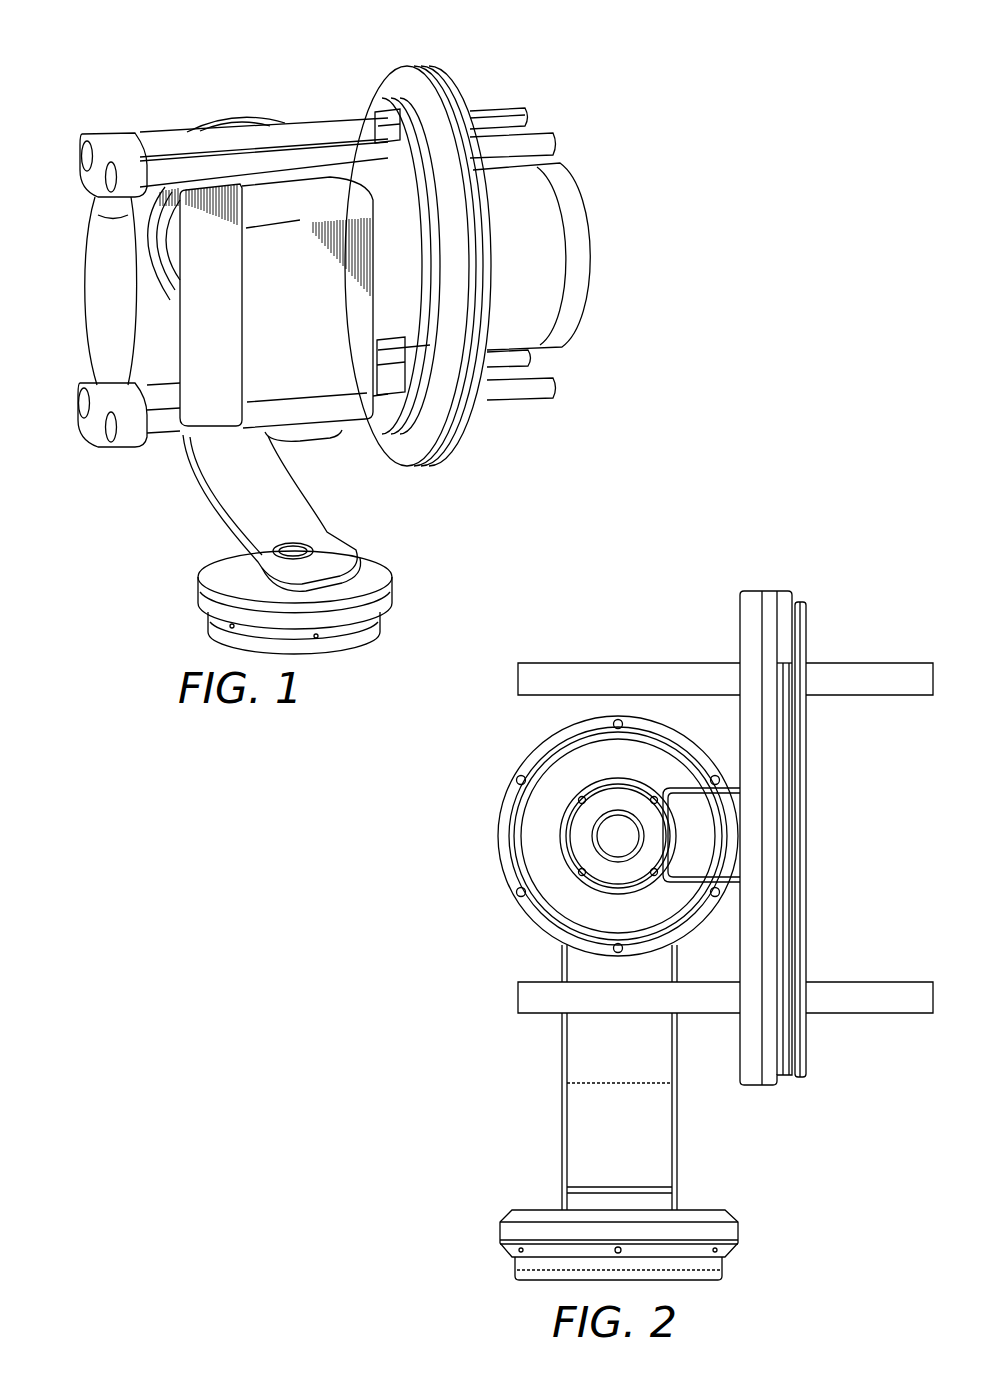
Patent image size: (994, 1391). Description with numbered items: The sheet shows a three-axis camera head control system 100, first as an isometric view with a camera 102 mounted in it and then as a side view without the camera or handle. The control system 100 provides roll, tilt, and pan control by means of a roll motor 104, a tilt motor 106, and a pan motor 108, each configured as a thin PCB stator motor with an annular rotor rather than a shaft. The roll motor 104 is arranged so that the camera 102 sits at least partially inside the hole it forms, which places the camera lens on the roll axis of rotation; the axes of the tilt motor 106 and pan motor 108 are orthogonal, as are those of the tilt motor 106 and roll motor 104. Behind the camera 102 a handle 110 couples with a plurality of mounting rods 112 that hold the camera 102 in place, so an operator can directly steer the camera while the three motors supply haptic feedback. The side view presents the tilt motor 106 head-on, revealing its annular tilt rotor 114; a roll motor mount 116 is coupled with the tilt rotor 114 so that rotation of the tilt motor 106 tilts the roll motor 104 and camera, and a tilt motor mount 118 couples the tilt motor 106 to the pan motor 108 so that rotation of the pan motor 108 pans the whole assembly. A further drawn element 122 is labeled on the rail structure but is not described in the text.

In FIG. 1, the control system 100 is at (591, 77).
In FIG. 2, the control system 100 is at (648, 630).
In FIG. 1, the camera 102 is at (313, 410).
In FIG. 1, the roll motor 104 is at (437, 70).
In FIG. 2, the roll motor 104 is at (787, 588).
In FIG. 1, the tilt motor 106 is at (203, 110).
In FIG. 2, the tilt motor 106 is at (512, 767).
In FIG. 1, the pan motor 108 is at (387, 553).
In FIG. 2, the pan motor 108 is at (505, 1213).
In FIG. 1, the handle 110 is at (98, 245).
In FIG. 1, the mounting rods 112 is at (528, 112).
In FIG. 2, the mounting rods 112 is at (876, 660).
In FIG. 2, the tilt rotor 114 is at (535, 855).
In FIG. 2, the roll motor mount 116 is at (723, 832).
In FIG. 2, the tilt motor mount 118 is at (575, 1120).
In FIG. 2, the thin rail 122 is at (800, 1047).